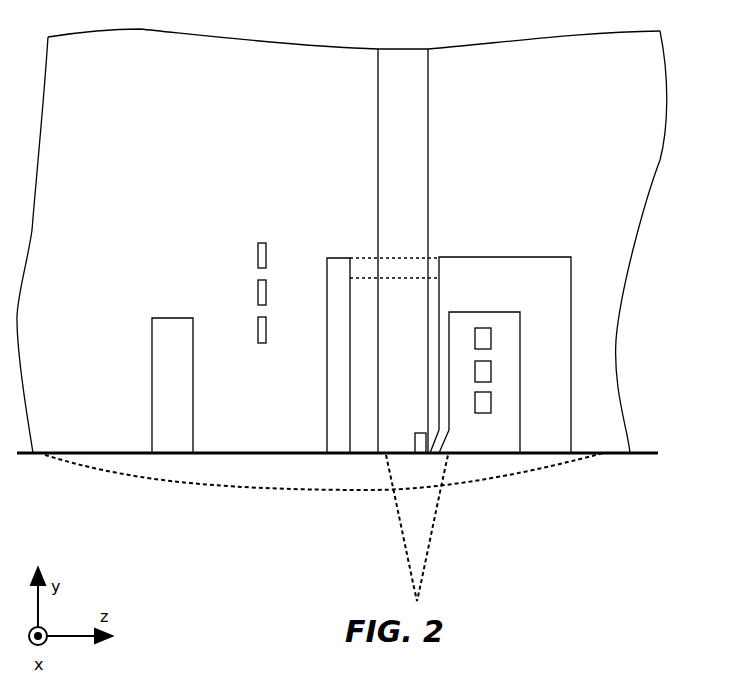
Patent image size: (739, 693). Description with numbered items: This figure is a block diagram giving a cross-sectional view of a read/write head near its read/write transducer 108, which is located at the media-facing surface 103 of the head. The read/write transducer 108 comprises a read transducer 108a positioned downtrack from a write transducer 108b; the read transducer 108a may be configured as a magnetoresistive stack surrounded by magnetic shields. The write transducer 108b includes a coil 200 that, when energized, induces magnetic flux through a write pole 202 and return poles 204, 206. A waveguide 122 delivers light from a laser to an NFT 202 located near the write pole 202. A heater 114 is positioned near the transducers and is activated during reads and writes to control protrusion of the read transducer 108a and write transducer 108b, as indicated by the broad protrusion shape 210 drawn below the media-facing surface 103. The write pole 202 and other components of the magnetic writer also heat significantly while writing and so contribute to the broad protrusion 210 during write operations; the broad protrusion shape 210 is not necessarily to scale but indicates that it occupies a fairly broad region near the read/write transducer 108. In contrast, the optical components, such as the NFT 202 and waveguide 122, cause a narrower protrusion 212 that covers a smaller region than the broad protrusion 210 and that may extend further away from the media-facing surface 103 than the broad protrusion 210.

The media-facing surface 103 is at (620, 457).
The read/write transducer 108 is at (342, 530).
The read transducer 108a is at (155, 366).
The write transducer 108b is at (524, 202).
The heater 114 is at (257, 243).
The waveguide 122 is at (402, 57).
The coil 200 is at (489, 376).
The write pole 202 is at (418, 432).
The return pole 204 is at (560, 428).
The return pole 206 is at (331, 410).
The broad protrusion shape 210 is at (195, 488).
The narrow protrusion 212 is at (425, 568).